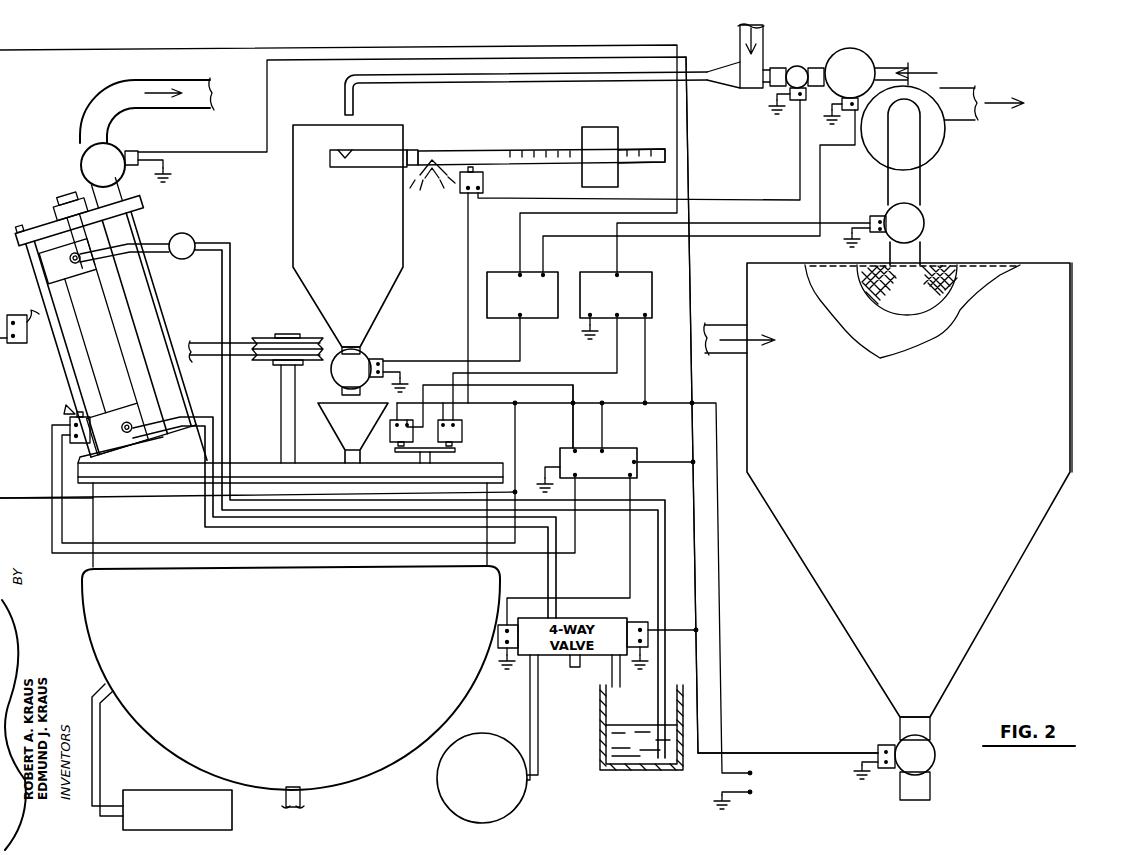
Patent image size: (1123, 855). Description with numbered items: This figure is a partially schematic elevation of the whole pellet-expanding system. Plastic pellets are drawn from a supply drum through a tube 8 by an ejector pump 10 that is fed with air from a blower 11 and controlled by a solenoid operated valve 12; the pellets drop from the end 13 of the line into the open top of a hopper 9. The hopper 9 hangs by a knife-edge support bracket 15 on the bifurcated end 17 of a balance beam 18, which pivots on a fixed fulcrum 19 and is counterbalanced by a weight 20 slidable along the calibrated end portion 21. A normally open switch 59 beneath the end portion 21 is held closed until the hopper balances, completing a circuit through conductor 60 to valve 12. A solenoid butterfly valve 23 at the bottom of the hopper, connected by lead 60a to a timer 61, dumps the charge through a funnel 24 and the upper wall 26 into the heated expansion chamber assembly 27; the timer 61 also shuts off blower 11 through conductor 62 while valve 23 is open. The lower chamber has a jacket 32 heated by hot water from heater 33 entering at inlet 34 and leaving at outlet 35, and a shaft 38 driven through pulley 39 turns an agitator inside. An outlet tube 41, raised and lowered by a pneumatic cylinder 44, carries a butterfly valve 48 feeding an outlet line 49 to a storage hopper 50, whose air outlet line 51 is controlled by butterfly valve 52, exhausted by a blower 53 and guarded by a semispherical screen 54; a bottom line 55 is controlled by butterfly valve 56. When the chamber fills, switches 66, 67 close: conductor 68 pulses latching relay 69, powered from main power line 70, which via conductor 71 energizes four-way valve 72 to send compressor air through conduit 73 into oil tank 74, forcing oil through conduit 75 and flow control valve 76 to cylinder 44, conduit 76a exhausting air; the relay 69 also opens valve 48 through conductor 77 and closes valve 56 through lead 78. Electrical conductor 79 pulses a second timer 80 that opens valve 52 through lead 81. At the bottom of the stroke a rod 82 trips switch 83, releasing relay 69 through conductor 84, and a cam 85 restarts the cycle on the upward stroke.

The tube 8 is at (761, 60).
The hopper 9 is at (300, 220).
The ejector pump 10 is at (748, 88).
The blower 11 is at (852, 55).
The solenoid operated valve 12 is at (800, 66).
The end of line 13 is at (343, 106).
The knife-edge support bracket 15 is at (345, 146).
The bifurcated end 17 is at (372, 170).
The balance beam 18 is at (457, 147).
The fulcrum 19 is at (437, 180).
The weight 20 is at (597, 127).
The calibrated end portion 21 is at (660, 150).
The butterfly valve 23 is at (363, 355).
The funnel 24 is at (353, 433).
The upper wall 26 is at (282, 463).
The heated expansion chamber assembly 27 is at (195, 570).
The jacket 32 is at (346, 776).
The heater 33 is at (178, 790).
The inlet 34 is at (100, 690).
The outlet 35 is at (300, 800).
The shaft 38 is at (285, 410).
The pulley 39 is at (262, 362).
The outlet tube 41 is at (150, 316).
The pneumatic cylinder 44 is at (92, 347).
The butterfly valve 48 is at (81, 170).
The outlet line 49 is at (172, 106).
The storage hopper 50 is at (978, 624).
The air outlet line 51 is at (921, 255).
The butterfly valve 52 is at (918, 221).
The blower 53 is at (936, 136).
The semispherical screen 54 is at (895, 298).
The line 55 is at (930, 790).
The butterfly valve 56 is at (934, 751).
The switch 59 is at (484, 180).
The conductor 60 is at (733, 199).
The lead 60a is at (460, 360).
The timer 61 is at (537, 318).
The conductor 62 is at (820, 196).
The switch 66 is at (390, 438).
The switch 67 is at (462, 432).
The conductor 68 is at (575, 386).
The latching relay 69 is at (560, 448).
The main power line 70 is at (717, 528).
The conductor 71 is at (612, 597).
The four-way valve 72 is at (541, 660).
The conduit 73 is at (611, 670).
The tank 74 is at (601, 746).
The conduit 75 is at (229, 312).
The flow control valve 76 is at (190, 235).
The conduit 76a is at (212, 518).
The conductor 77 is at (692, 270).
The lead 78 is at (770, 752).
The electrical conductor 79 is at (646, 356).
The second timer 80 is at (652, 298).
The lead 81 is at (832, 222).
The rod 82 is at (62, 362).
The switch 83 is at (70, 428).
The conductor 84 is at (82, 556).
The cam 85 is at (67, 405).